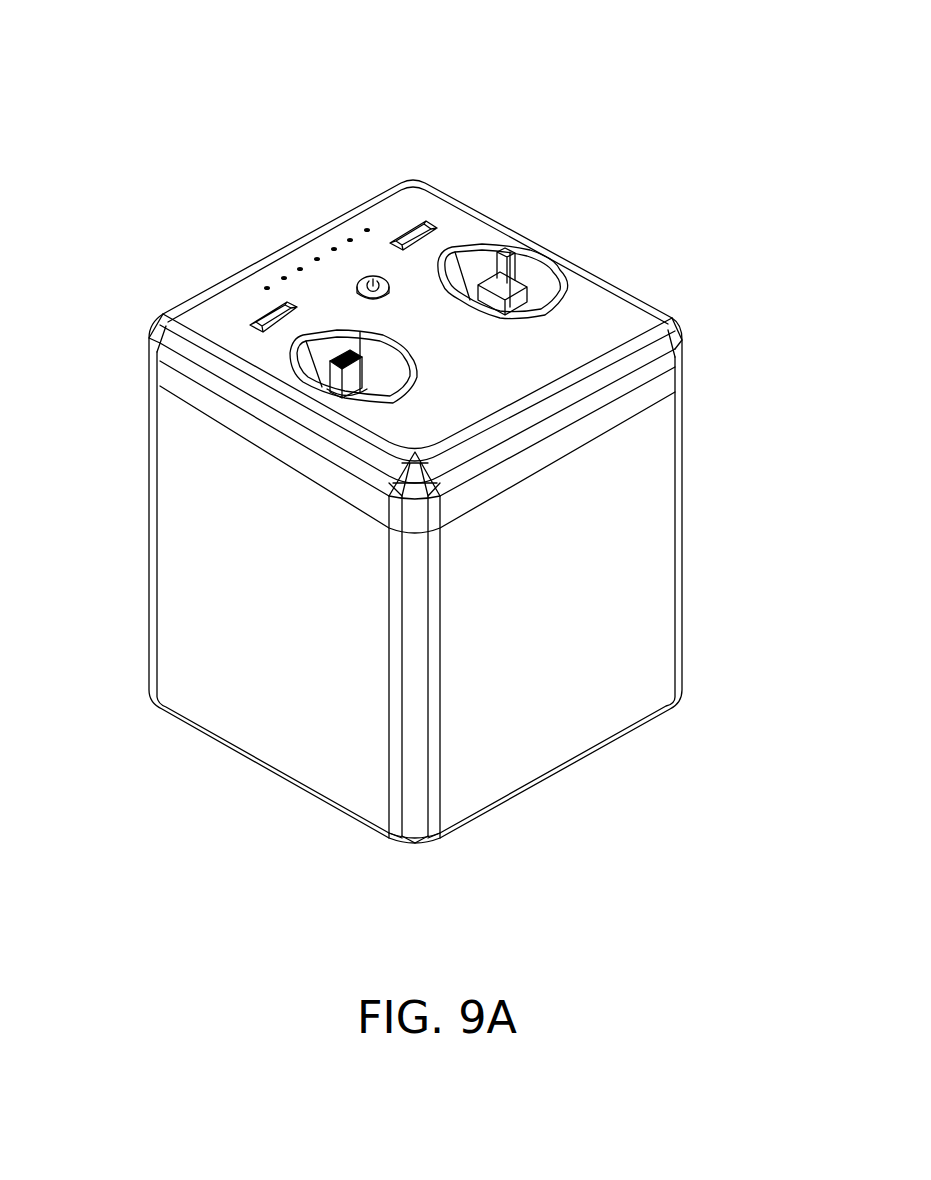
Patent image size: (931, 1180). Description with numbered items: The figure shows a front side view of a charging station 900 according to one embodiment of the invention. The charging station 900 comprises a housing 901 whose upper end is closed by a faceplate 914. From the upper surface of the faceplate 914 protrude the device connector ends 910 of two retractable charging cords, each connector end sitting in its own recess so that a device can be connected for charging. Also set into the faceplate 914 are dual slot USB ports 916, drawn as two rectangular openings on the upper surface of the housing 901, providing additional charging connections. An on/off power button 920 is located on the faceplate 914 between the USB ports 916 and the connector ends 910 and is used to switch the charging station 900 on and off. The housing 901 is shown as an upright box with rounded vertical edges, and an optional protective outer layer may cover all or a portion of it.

The charging station 900 is at (400, 113).
The housing 901 is at (745, 500).
The device connector ends 910 is at (513, 270).
The faceplate 914 is at (585, 315).
The dual slot USB ports 916 is at (407, 232).
The on/off power button 920 is at (355, 292).